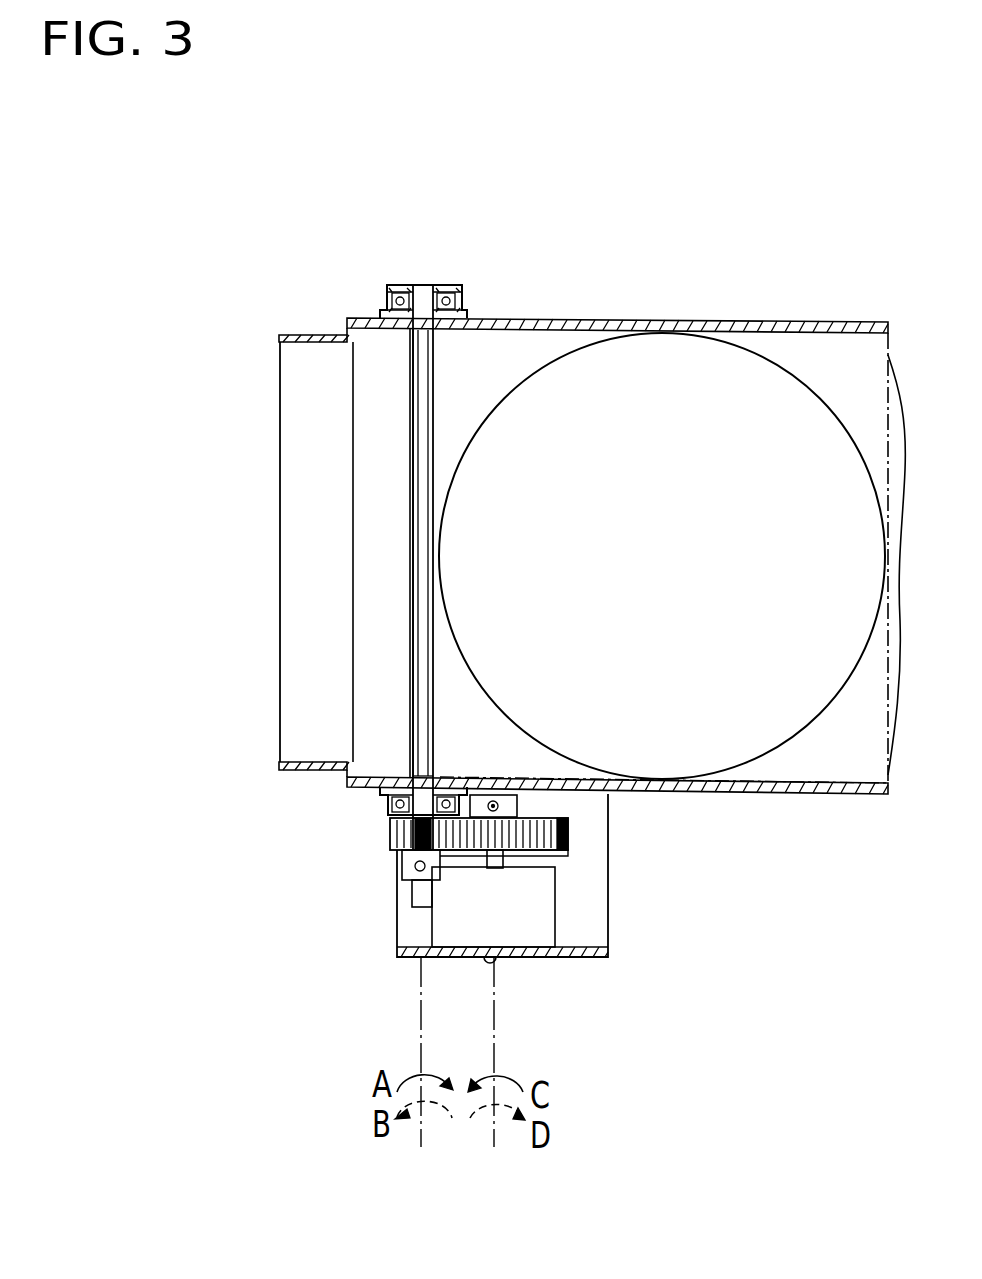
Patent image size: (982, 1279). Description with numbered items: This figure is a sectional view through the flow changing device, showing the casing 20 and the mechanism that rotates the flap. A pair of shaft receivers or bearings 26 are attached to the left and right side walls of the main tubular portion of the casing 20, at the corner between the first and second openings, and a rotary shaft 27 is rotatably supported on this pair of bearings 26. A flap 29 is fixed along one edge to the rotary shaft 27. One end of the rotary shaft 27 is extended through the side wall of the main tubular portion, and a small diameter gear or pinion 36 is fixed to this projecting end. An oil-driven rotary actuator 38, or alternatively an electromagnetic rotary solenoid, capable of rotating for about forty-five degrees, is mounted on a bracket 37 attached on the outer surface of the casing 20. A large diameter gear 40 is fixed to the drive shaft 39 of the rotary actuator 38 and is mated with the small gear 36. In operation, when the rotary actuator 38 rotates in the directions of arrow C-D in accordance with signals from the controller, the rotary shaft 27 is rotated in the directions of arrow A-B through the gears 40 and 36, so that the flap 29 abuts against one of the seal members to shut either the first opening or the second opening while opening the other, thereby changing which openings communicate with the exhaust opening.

The casing 20 is at (732, 793).
The bearings 26 is at (471, 298).
The rotary shaft 27 is at (410, 628).
The flap 29 is at (421, 408).
The small diameter gear 36 is at (394, 848).
The bracket 37 is at (565, 955).
The rotary actuator 38 is at (488, 950).
The drive shaft 39 is at (502, 858).
The large diameter gear 40 is at (570, 835).